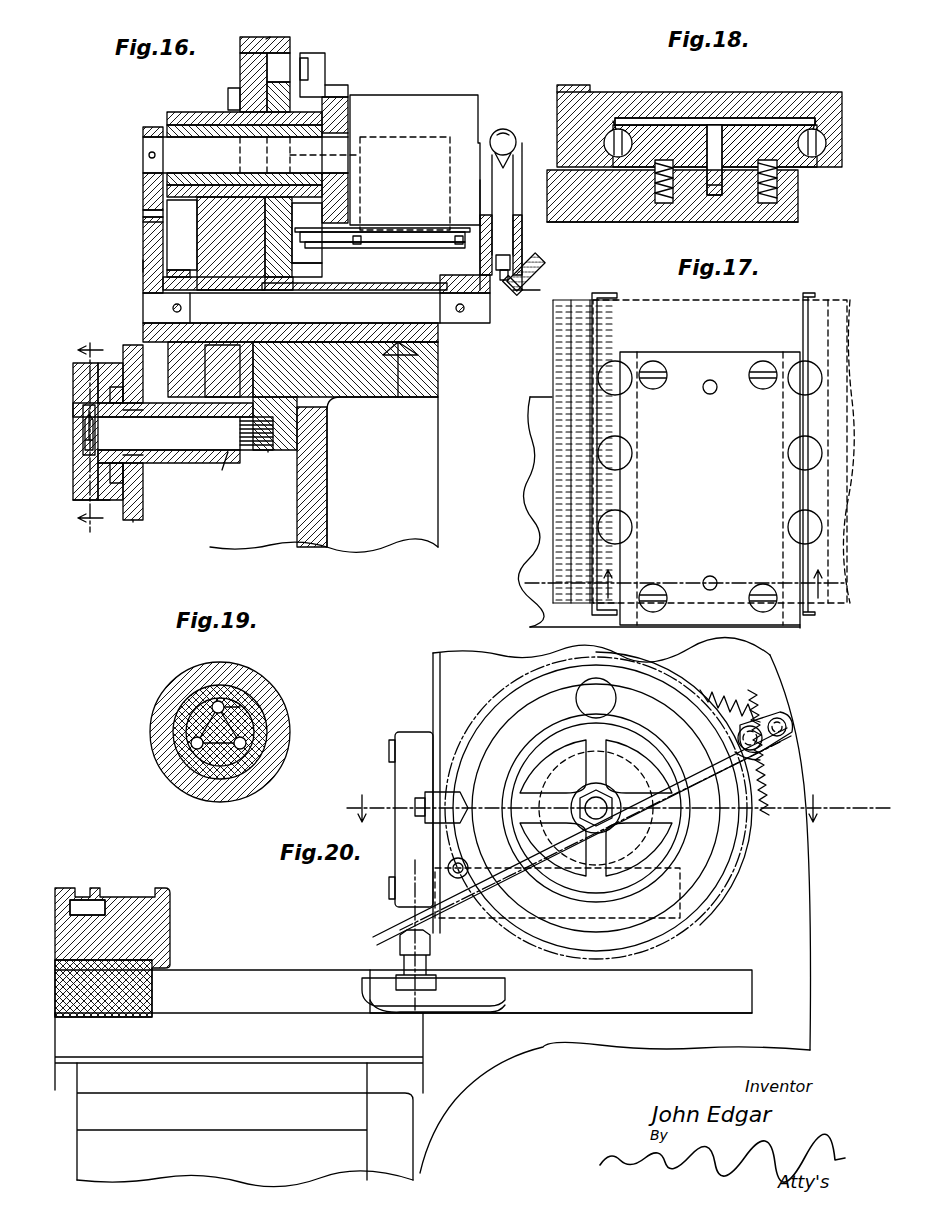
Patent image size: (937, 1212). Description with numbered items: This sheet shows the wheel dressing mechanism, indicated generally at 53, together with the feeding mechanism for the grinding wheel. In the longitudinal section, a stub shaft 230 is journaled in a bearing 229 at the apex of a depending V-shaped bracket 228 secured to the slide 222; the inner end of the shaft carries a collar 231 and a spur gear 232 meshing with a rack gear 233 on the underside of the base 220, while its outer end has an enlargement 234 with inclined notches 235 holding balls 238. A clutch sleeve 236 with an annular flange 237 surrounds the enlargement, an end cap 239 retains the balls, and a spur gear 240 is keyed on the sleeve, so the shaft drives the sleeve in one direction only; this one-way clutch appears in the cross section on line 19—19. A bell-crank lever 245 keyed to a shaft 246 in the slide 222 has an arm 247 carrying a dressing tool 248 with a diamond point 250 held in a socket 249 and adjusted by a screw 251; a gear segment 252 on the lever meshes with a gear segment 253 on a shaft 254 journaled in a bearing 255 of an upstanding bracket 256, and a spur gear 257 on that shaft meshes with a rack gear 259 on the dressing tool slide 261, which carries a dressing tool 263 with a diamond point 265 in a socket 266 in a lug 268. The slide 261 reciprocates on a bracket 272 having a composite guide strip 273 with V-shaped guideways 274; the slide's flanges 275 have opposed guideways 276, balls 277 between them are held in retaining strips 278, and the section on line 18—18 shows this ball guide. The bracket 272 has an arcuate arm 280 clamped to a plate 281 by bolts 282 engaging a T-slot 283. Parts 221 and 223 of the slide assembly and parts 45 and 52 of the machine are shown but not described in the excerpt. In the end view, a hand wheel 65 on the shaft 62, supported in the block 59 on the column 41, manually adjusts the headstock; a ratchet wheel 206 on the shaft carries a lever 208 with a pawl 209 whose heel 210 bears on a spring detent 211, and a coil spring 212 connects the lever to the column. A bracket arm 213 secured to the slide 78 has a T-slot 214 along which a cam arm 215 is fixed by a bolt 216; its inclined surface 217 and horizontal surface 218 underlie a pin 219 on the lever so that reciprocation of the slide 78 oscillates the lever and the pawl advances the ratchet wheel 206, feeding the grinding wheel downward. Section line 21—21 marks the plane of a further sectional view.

In FIG. 17, the section line 18— 18 is at (659, 584).
In FIG. 16, the section line 19— 19 is at (90, 436).
In FIG. 20, the section line 21— 21 is at (609, 808).
In FIG. 20, the column 41 is at (445, 672).
In FIG. 20, the slide block 45 is at (170, 912).
In FIG. 20, the housing 52 is at (482, 690).
In FIG. 16, the clutch unit 53 is at (452, 90).
In FIG. 20, the block 59 is at (410, 735).
In FIG. 20, the shaft 62 is at (605, 818).
In FIG. 20, the hand wheel 65 is at (700, 860).
In FIG. 20, the slide 78 is at (248, 1045).
In FIG. 20, the ratchet wheel 206 is at (735, 812).
In FIG. 20, the lever 208 is at (790, 718).
In FIG. 20, the pawl 209 is at (760, 762).
In FIG. 20, the heel 210 is at (790, 740).
In FIG. 20, the spring detent 211 is at (782, 720).
In FIG. 20, the coil spring 212 is at (738, 690).
In FIG. 20, the bracket arm 213 is at (685, 1002).
In FIG. 20, the T-slot 214 is at (470, 1003).
In FIG. 20, the cam arm 215 is at (397, 920).
In FIG. 20, the bolt 216 is at (430, 968).
In FIG. 20, the downwardly inclined surface 217 is at (425, 885).
In FIG. 20, the horizontal surface 218 is at (645, 880).
In FIG. 20, the pin 219 is at (538, 805).
In FIG. 16, the base 220 is at (425, 512).
In FIG. 16, the key 221 is at (398, 372).
In FIG. 16, the slide 222 is at (395, 345).
In FIG. 16, the block 223 is at (430, 365).
In FIG. 16, the V-shaped bracket 228 is at (168, 355).
In FIG. 16, the bearing 229 is at (228, 455).
In FIG. 16, the stub shaft 230 is at (200, 440).
In FIG. 16, the collar 231 is at (268, 450).
In FIG. 16, the spur gear 232 is at (263, 452).
In FIG. 16, the rack gear 233 is at (315, 425).
In FIG. 16, the enlargement 234 is at (95, 432).
In FIG. 19, the enlargement 234 is at (190, 705).
In FIG. 19, the notches 235 is at (192, 740).
In FIG. 16, the clutch sleeve 236 is at (118, 505).
In FIG. 16, the annular flange 237 is at (75, 375).
In FIG. 19, the annular flange 237 is at (178, 752).
In FIG. 16, the balls 238 is at (88, 445).
In FIG. 19, the balls 238 is at (258, 722).
In FIG. 16, the end cap 239 is at (75, 500).
In FIG. 19, the end cap 239 is at (252, 682).
In FIG. 16, the spur gear 240 is at (138, 508).
In FIG. 16, the bell-crank lever 245 is at (140, 266).
In FIG. 16, the shaft 246 is at (152, 302).
In FIG. 16, the arm 247 is at (522, 292).
In FIG. 16, the dressing tool 248 is at (508, 224).
In FIG. 16, the socket 249 is at (515, 240).
In FIG. 16, the diamond point 250 is at (495, 162).
In FIG. 16, the screw 251 is at (533, 278).
In FIG. 16, the gear segment 252 is at (143, 232).
In FIG. 16, the gear segment 253 is at (145, 180).
In FIG. 16, the shaft 254 is at (168, 145).
In FIG. 16, the bearing 255 is at (165, 115).
In FIG. 16, the upstanding bracket 256 is at (244, 40).
In FIG. 16, the spur gear 257 is at (348, 94).
In FIG. 18, the rack gear 259 is at (565, 85).
In FIG. 17, the rack gear 259 is at (552, 442).
In FIG. 16, the dressing tool slide 261 is at (415, 98).
In FIG. 18, the dressing tool slide 261 is at (718, 95).
In FIG. 17, the dressing tool slide 261 is at (710, 303).
In FIG. 16, the dressing tool 263 is at (514, 138).
In FIG. 16, the diamond point 265 is at (503, 128).
In FIG. 16, the socket 266 is at (492, 158).
In FIG. 16, the lug 268 is at (523, 150).
In FIG. 16, the bracket 272 is at (290, 313).
In FIG. 18, the bracket 272 is at (798, 200).
In FIG. 17, the bracket 272 is at (795, 622).
In FIG. 16, the composite guide strip 273 is at (408, 245).
In FIG. 18, the composite guide strip 273 is at (742, 130).
In FIG. 17, the composite guide strip 273 is at (716, 362).
In FIG. 16, the V-shaped guideways 274 is at (354, 294).
In FIG. 18, the V-shaped guideways 274 is at (640, 135).
In FIG. 17, the V-shaped guideways 274 is at (634, 505).
In FIG. 18, the flanges 275 is at (580, 100).
In FIG. 16, the V-shaped guideways 276 is at (360, 240).
In FIG. 18, the V-shaped guideways 276 is at (612, 132).
In FIG. 17, the V-shaped guideways 276 is at (838, 482).
In FIG. 18, the balls 277 is at (663, 200).
In FIG. 17, the balls 277 is at (805, 450).
In FIG. 16, the retaining strips 278 is at (462, 225).
In FIG. 18, the retaining strips 278 is at (615, 122).
In FIG. 17, the retaining strips 278 is at (617, 296).
In FIG. 16, the arcuate arm 280 is at (318, 66).
In FIG. 16, the plate 281 is at (268, 38).
In FIG. 16, the bolts 282 is at (228, 96).
In FIG. 16, the T-slot 283 is at (316, 62).